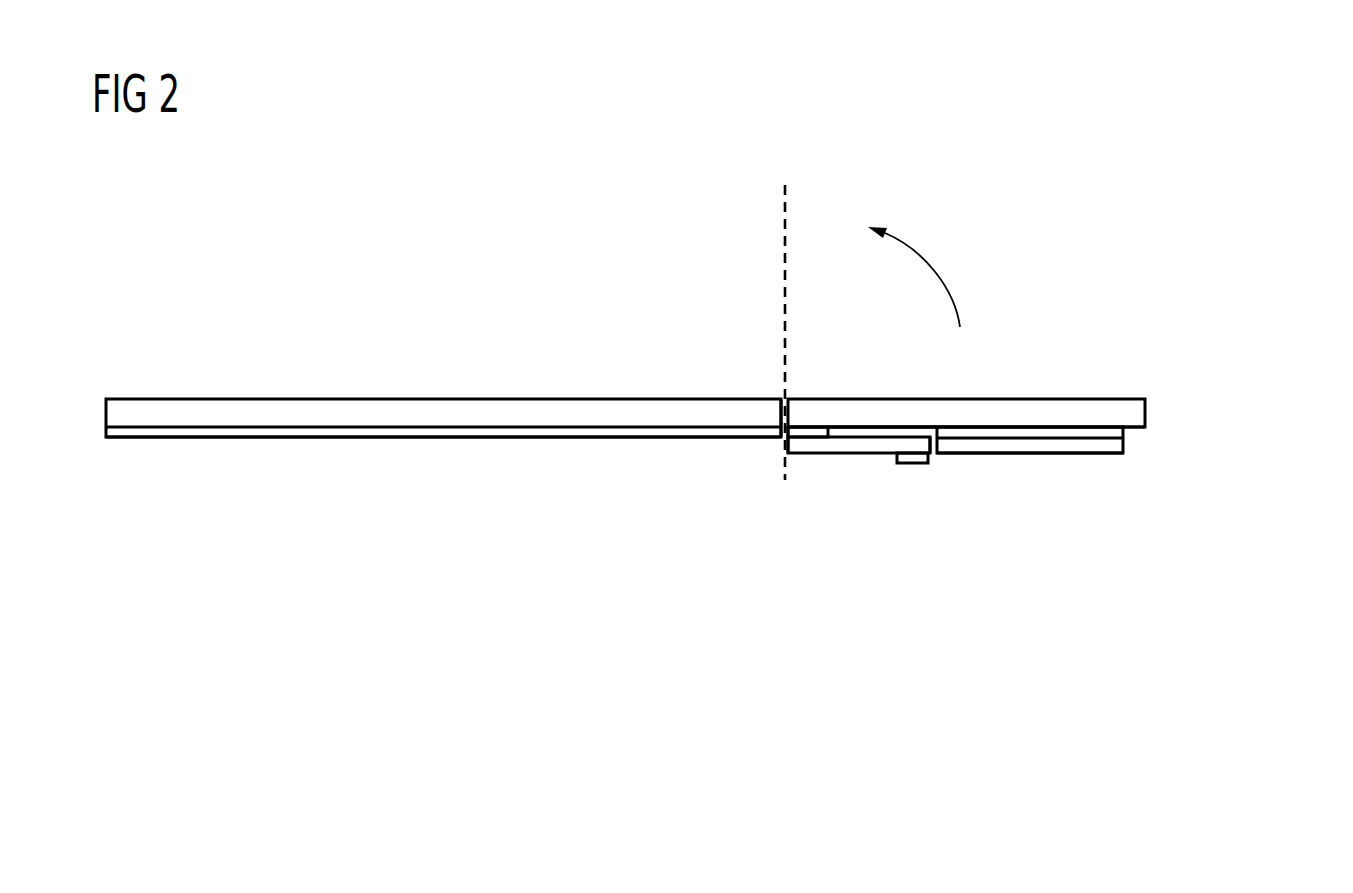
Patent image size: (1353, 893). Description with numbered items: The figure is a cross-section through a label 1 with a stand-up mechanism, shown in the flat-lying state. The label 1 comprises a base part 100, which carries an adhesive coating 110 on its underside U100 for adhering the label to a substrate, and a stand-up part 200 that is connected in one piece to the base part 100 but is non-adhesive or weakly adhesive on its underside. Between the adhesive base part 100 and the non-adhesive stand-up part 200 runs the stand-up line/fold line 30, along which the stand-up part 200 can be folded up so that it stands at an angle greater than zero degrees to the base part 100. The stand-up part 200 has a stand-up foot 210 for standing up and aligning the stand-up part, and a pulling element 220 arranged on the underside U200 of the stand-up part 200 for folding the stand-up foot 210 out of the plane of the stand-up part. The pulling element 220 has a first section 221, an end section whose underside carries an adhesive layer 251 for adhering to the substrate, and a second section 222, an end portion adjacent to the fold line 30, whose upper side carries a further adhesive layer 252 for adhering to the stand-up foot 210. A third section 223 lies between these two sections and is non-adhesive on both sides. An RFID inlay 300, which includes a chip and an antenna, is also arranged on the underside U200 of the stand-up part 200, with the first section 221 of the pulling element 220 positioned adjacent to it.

The label 1 is at (141, 197).
The stand-up line/fold line 30 is at (784, 222).
The base part 100 is at (443, 408).
The adhesive coating 110 is at (242, 434).
The underside of the base part U100 is at (445, 428).
The stand-up part 200 is at (1064, 342).
The stand-up foot 210 is at (836, 363).
The pulling element 220 is at (862, 427).
The underside of the stand-up part U200 is at (926, 427).
The first section of the pulling element 221 is at (910, 443).
The second section of the pulling element 222 is at (807, 443).
The third section of the pulling element 223 is at (840, 443).
The adhesive layer 251 is at (897, 455).
The further adhesive layer 252 is at (802, 430).
The RFID inlay 300 is at (1115, 445).